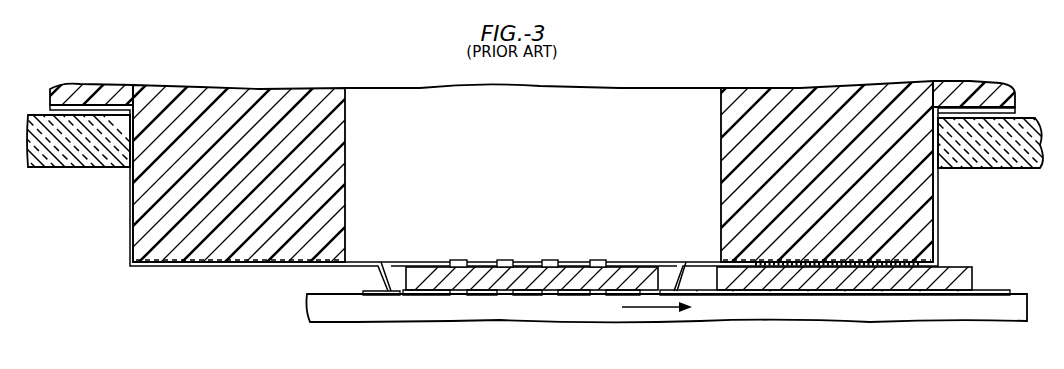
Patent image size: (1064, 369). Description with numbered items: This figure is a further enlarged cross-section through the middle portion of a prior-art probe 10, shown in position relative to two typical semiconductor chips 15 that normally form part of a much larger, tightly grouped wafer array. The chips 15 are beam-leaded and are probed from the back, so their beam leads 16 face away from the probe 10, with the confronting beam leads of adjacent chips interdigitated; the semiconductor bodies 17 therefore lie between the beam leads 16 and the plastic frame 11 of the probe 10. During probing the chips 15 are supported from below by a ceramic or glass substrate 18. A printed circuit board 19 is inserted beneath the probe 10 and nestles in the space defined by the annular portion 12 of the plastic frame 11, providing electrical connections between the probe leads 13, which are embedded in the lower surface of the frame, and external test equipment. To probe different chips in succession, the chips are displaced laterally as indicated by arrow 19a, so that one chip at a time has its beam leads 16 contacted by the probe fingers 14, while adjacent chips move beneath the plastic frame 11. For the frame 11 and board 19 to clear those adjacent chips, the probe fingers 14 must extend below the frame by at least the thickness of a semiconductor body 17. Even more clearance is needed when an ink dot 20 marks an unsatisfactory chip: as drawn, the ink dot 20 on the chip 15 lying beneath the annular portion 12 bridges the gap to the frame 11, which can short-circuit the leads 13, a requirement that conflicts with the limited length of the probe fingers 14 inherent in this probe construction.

The probe 10 is at (260, 76).
The plastic frame 11 is at (128, 85).
The annular portion 12 is at (145, 190).
The probe leads 13 is at (212, 264).
The probe fingers 14 is at (383, 275).
The semiconductor chips 15 is at (528, 282).
The beam leads 16 is at (410, 293).
The semiconductor bodies 17 is at (486, 292).
The substrate 18 is at (345, 310).
The printed circuit board 19 is at (80, 167).
The arrow 19a is at (647, 308).
The ink dot 20 is at (923, 264).